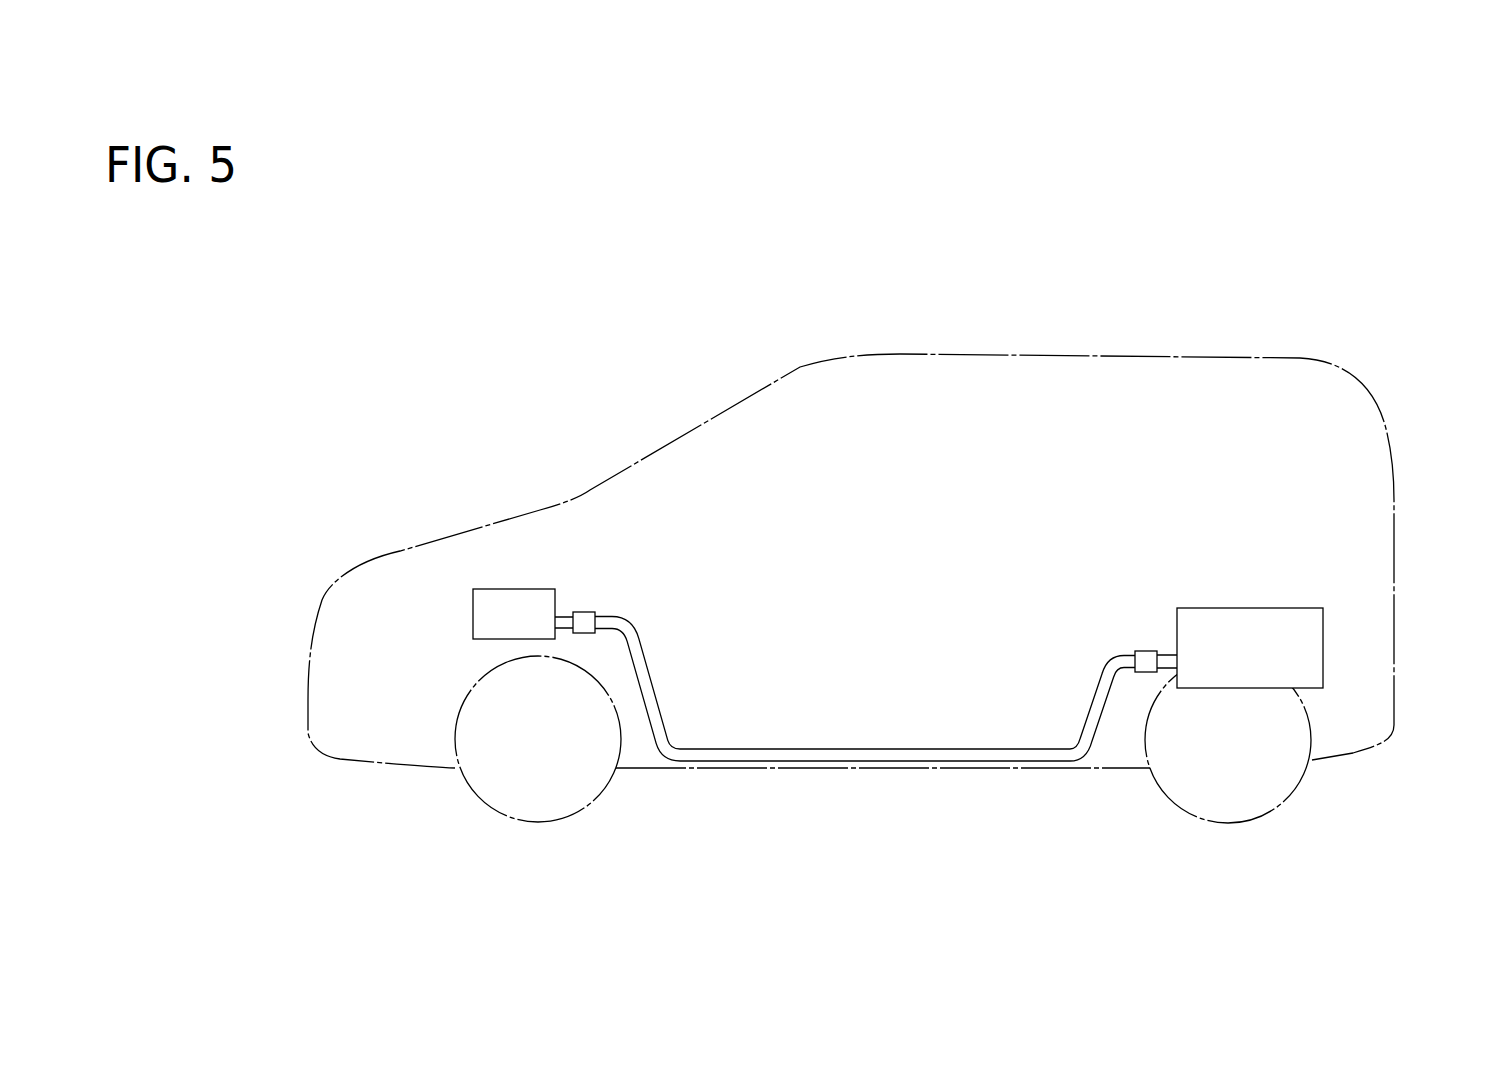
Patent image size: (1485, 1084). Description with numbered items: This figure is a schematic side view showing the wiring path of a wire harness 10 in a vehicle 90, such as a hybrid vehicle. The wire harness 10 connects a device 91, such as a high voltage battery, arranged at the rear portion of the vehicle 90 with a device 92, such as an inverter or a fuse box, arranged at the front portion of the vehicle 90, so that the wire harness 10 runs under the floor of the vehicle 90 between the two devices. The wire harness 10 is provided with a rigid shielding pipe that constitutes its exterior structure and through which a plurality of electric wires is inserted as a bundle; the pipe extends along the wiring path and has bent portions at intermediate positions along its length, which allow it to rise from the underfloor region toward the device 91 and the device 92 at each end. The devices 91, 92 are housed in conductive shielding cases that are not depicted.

The wire harness 10 is at (866, 736).
The vehicle 90 is at (963, 363).
The device 91 is at (1313, 628).
The device 92 is at (500, 597).